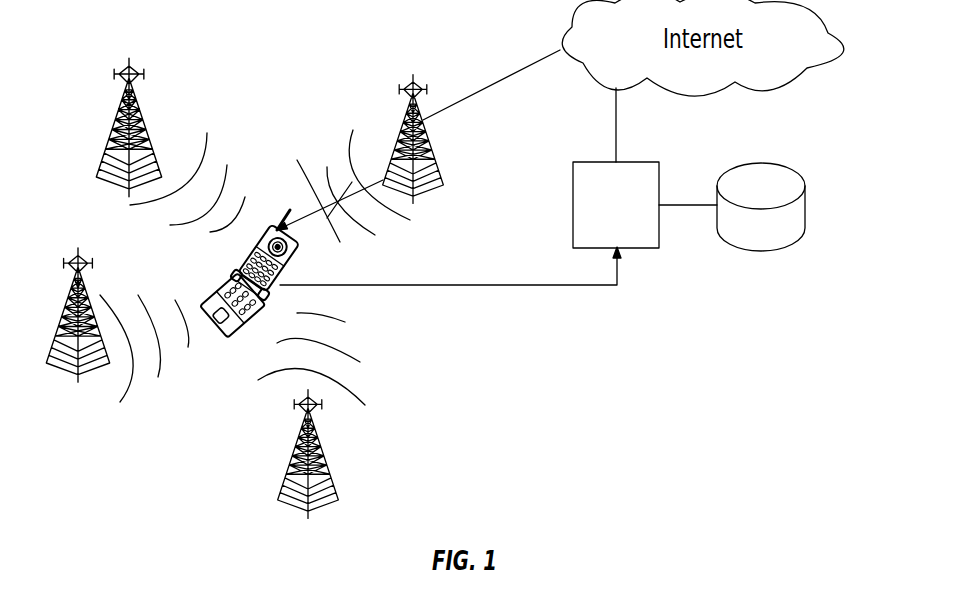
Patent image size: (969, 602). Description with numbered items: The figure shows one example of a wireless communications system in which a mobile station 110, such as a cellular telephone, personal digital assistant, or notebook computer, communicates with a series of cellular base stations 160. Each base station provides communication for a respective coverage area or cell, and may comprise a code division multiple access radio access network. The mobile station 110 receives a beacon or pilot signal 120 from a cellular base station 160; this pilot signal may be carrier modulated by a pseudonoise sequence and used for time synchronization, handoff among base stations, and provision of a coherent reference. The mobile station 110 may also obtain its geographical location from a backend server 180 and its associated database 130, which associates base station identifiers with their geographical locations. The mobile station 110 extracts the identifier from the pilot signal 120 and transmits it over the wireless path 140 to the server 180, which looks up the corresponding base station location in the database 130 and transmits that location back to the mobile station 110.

The mobile station 110 is at (227, 330).
The pilot signal 120 is at (317, 193).
The database 130 is at (805, 203).
The wireless path 140 is at (467, 285).
The cellular base station 160 is at (148, 125).
The backend server 180 is at (573, 205).